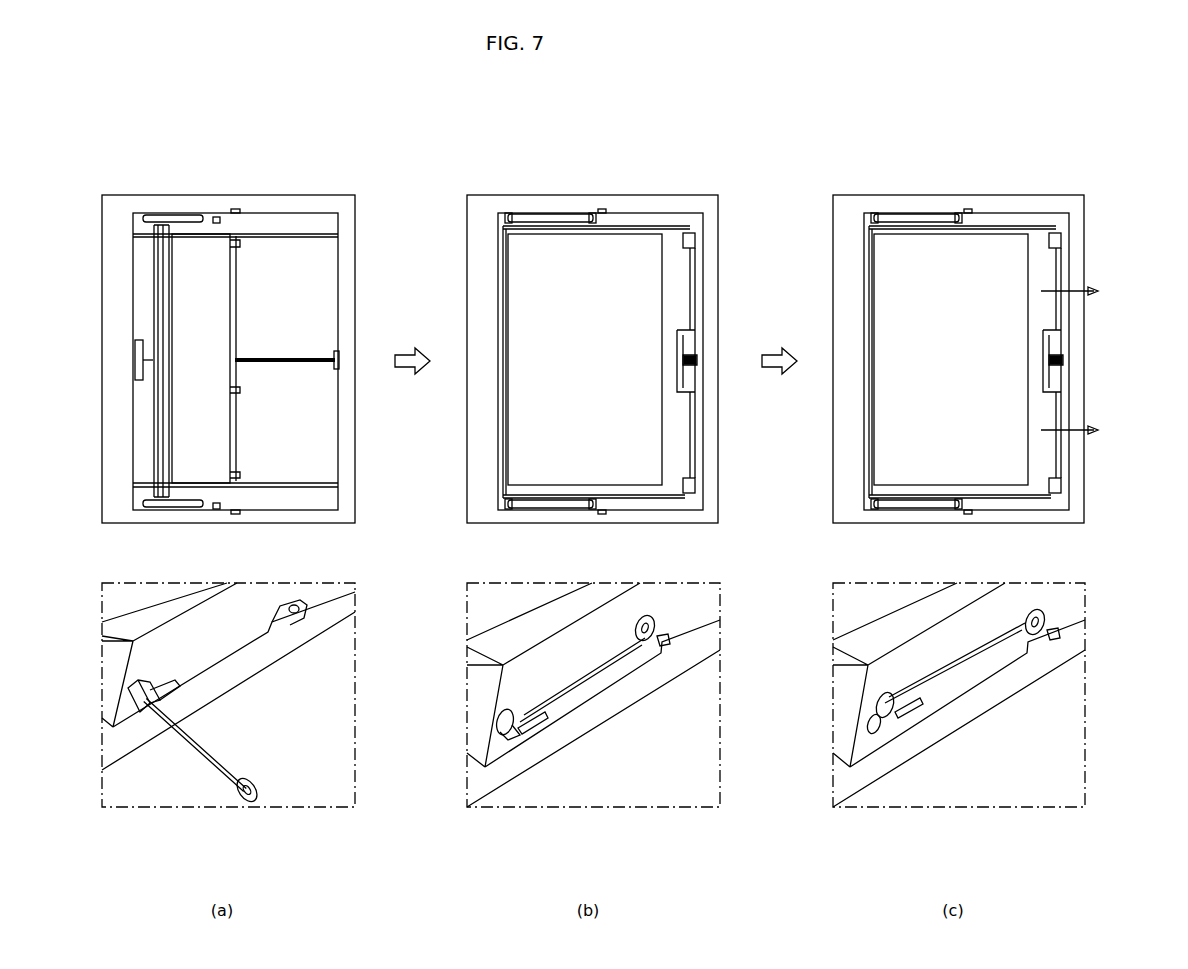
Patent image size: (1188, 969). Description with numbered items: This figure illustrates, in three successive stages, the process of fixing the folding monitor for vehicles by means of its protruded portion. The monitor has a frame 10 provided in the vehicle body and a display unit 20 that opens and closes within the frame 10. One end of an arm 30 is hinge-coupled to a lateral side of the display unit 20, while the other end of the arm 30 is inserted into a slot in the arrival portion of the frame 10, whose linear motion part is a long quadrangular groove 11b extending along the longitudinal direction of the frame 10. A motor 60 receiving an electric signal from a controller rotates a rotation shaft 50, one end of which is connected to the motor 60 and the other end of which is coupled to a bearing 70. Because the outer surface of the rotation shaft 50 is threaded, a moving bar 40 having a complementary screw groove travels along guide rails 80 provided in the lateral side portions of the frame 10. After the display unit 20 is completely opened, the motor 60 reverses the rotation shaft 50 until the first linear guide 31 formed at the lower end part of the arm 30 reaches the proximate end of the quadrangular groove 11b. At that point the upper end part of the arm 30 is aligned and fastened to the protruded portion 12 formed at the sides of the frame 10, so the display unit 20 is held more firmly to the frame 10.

The frame 10 is at (328, 205).
The quadrangular groove 11b is at (172, 700).
The protruded portion 12 is at (238, 210).
The display unit 20 is at (218, 245).
The arm 30 is at (163, 214).
The first linear guide 31 is at (130, 700).
The moving bar 40 is at (217, 217).
The rotation shaft 50 is at (302, 354).
The motor 60 is at (135, 340).
The bearing 70 is at (339, 360).
The guide rail 80 is at (318, 236).